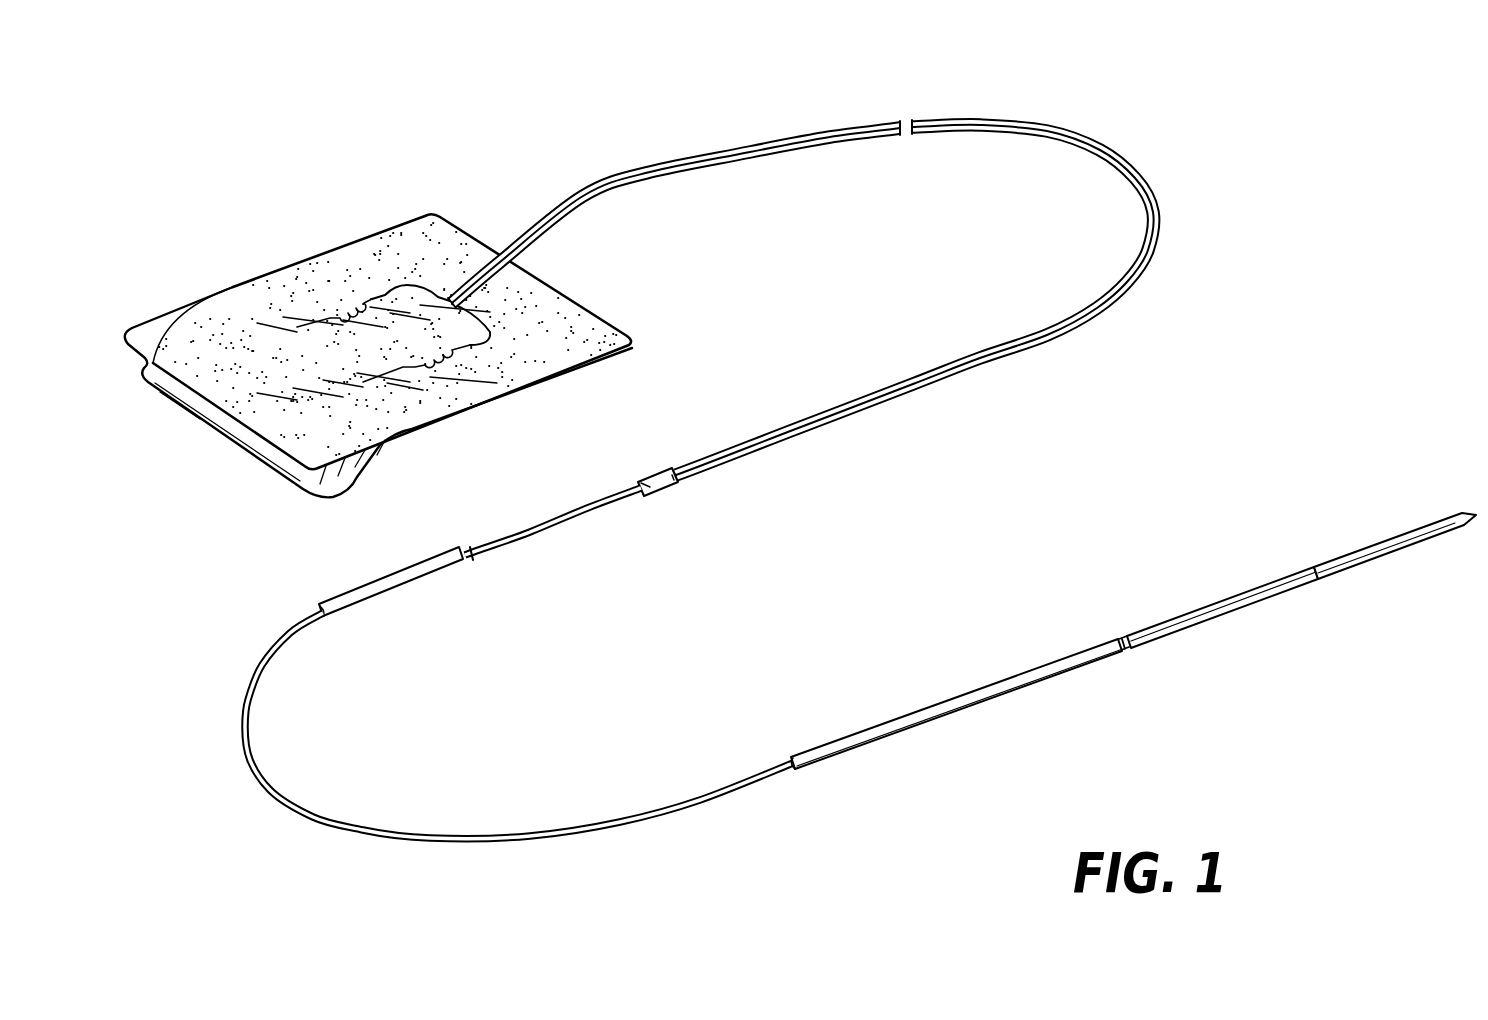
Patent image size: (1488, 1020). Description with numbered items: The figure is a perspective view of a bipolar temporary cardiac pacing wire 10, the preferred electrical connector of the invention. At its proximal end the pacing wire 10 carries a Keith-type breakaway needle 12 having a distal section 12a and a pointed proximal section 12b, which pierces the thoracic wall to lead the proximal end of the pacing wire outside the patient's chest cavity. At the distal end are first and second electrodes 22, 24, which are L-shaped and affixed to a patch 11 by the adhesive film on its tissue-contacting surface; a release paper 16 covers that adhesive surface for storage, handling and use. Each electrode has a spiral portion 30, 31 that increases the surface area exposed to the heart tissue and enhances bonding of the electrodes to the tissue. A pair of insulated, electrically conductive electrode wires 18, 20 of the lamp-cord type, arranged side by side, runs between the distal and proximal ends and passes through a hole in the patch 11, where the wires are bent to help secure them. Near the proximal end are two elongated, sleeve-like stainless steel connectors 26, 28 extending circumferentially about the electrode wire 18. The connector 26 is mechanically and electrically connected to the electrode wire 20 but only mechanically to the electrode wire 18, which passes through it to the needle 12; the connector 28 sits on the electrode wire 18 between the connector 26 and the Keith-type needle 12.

The bipolar temporary cardiac pacing wire 10 is at (800, 454).
The patch 11 is at (238, 304).
The Keith-type breakaway needle 12 is at (1133, 607).
The distal section 12a is at (923, 711).
The proximal section 12b is at (1453, 513).
The release paper 16 is at (323, 478).
The electrode wire 18 is at (801, 278).
The electrode wire 20 is at (762, 157).
The first electrode 22 is at (353, 259).
The second electrode 24 is at (461, 390).
The connector 26 is at (640, 498).
The connector 28 is at (383, 598).
The spiral portion 30 is at (377, 293).
The spiral portion 31 is at (430, 368).